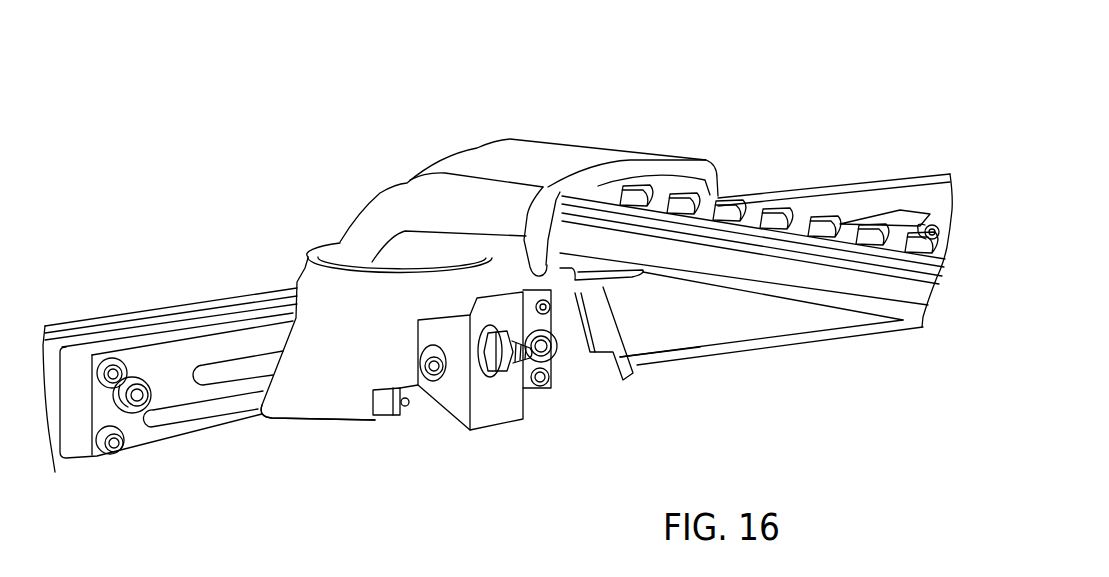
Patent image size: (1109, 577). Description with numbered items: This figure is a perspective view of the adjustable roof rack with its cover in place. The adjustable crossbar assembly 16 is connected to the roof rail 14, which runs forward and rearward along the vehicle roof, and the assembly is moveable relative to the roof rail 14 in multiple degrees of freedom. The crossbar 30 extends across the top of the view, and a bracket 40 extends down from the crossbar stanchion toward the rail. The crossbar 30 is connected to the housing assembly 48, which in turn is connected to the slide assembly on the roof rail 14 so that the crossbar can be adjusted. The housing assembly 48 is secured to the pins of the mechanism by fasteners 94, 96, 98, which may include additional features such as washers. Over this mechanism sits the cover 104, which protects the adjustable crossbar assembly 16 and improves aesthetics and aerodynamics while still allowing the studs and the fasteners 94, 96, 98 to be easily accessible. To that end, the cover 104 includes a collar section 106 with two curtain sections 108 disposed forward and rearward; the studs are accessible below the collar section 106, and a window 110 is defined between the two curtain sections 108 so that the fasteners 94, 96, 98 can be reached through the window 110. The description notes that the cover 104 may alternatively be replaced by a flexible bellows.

The adjustable crossbar assembly 16 is at (368, 104).
The crossbar 30 is at (523, 150).
The roof rail 14 is at (83, 330).
The bracket 40 is at (110, 433).
The cover 104 is at (308, 256).
The collar section 106 is at (298, 277).
The curtain section 108 is at (300, 409).
The window 110 is at (385, 405).
The housing assembly 48 is at (492, 433).
The fastener 94 is at (508, 376).
The fastener 96 is at (422, 383).
The fastener 98 is at (552, 360).